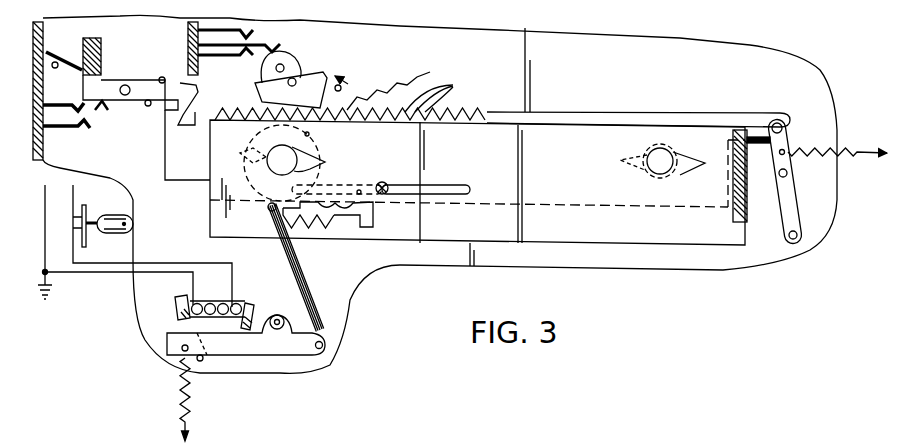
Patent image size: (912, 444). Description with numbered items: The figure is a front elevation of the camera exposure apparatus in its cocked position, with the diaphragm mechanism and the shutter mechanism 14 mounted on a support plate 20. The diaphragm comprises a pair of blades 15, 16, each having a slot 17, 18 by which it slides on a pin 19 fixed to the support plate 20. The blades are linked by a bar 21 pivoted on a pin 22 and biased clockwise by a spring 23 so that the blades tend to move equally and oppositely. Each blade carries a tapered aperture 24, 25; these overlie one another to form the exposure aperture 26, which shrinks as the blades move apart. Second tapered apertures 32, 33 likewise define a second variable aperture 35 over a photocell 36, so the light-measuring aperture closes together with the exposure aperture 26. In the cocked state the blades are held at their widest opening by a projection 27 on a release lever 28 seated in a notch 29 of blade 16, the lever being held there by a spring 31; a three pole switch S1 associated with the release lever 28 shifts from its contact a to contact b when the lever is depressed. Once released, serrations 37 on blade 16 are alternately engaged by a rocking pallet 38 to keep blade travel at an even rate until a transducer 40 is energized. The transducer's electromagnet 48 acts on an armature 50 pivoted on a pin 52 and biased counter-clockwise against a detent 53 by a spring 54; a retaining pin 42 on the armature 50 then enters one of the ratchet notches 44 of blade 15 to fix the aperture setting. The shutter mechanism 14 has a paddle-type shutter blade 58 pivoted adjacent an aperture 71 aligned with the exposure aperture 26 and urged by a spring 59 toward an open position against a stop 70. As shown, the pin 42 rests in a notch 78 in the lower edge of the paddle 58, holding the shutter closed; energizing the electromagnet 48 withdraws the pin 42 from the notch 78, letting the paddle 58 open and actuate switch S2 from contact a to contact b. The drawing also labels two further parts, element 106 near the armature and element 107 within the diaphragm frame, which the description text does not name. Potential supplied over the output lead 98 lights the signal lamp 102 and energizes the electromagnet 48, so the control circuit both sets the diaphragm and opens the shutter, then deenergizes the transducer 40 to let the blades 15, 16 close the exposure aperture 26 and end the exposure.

The shutter mechanism 14 is at (387, 45).
The diaphragm blade 15 is at (572, 133).
The diaphragm blade 16 is at (682, 93).
The slot 17 is at (447, 188).
The slot 18 is at (377, 212).
The pin 19 is at (405, 173).
The support plate 20 is at (813, 80).
The bar 21 is at (791, 195).
The pin 22 is at (788, 173).
The spring 23 is at (851, 147).
The tapered aperture 24 is at (321, 161).
The tapered aperture 25 is at (250, 150).
The exposure aperture 26 is at (248, 158).
The projection 27 is at (183, 96).
The release lever 28 is at (103, 58).
The notch 29 is at (195, 120).
The spring 31 is at (70, 57).
The second tapered aperture 32 is at (680, 175).
The second tapered aperture 33 is at (626, 153).
The second variable aperture 35 is at (666, 158).
The photocell 36 is at (641, 176).
The serrations 37 is at (443, 96).
The rocking pallet 38 is at (318, 76).
The transducer 40 is at (163, 321).
The retaining pin 42 is at (324, 325).
The ratchet notches 44 is at (305, 232).
The electromagnet 48 is at (178, 303).
The armature 50 is at (258, 357).
The pin 52 is at (288, 296).
The detent 53 is at (201, 362).
The spring 54 is at (175, 392).
The shutter blade 58 is at (256, 100).
The spring 59 is at (430, 73).
The stop 70 is at (342, 88).
The aperture 71 is at (330, 143).
The notch 78 is at (269, 188).
The output lead 98 is at (74, 200).
The signal lamp 102 is at (133, 224).
The pivot pin 106 is at (285, 232).
The gear 107 is at (337, 204).
The three pole switch S1 is at (101, 123).
The switch S2 is at (230, 78).